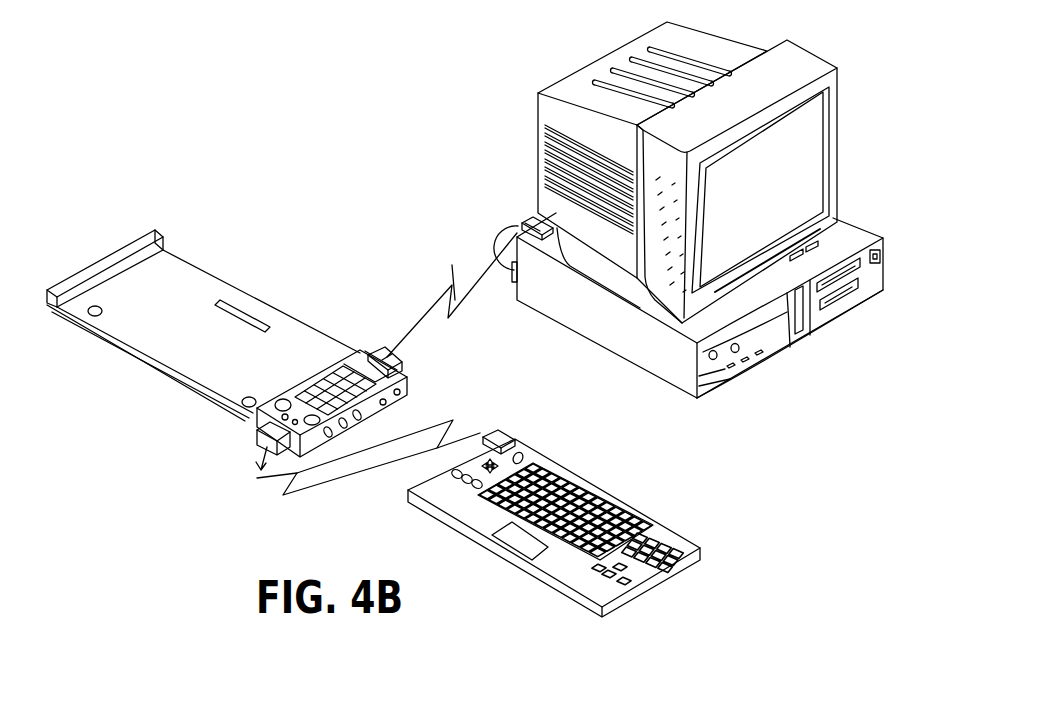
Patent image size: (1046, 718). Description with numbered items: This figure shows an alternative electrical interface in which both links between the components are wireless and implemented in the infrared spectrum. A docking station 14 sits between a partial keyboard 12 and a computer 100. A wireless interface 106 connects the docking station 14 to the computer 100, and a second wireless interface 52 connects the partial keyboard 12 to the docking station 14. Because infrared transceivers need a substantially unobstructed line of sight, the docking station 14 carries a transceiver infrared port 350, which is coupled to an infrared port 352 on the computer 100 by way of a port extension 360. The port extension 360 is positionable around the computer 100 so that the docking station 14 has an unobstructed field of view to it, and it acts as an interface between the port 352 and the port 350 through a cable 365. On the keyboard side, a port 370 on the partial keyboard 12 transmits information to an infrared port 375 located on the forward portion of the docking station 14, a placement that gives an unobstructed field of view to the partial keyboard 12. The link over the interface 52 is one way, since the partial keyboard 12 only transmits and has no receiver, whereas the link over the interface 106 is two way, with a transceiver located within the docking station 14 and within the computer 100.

The partial keyboard 12 is at (658, 528).
The docking station 14 is at (168, 352).
The wireless interface 52 is at (358, 463).
The computer 100 is at (853, 228).
The wireless interface 106 is at (425, 310).
The transceiver infrared port 350 is at (386, 349).
The infrared port 352 is at (508, 288).
The port extension 360 is at (528, 217).
The cable 365 is at (497, 233).
The port 370 is at (496, 434).
The infrared port 375 is at (258, 430).